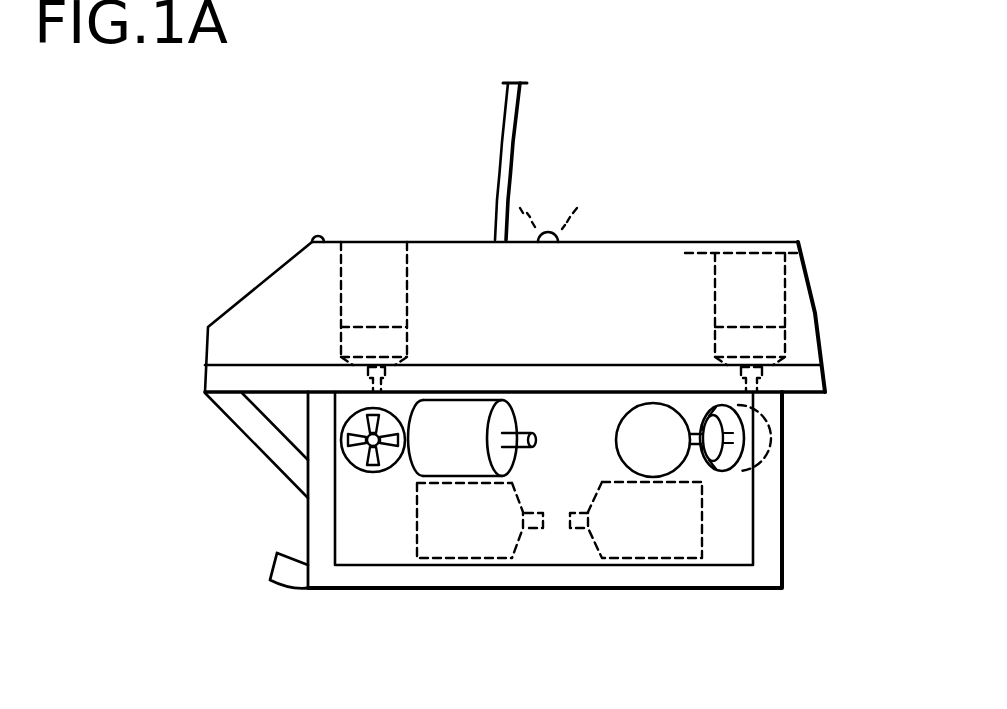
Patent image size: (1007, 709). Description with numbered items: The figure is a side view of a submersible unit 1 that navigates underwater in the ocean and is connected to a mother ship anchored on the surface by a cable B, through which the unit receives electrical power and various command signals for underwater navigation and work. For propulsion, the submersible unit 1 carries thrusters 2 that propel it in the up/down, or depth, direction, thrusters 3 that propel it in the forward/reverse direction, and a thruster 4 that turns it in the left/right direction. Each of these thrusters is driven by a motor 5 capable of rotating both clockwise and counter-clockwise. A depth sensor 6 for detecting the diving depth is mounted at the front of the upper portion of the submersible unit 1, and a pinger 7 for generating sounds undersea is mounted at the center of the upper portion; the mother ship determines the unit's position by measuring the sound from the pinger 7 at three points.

The submersible unit 1 is at (706, 203).
The thrusters 2 is at (341, 338).
The thrusters 3 is at (748, 455).
The thruster 4 is at (347, 460).
The motor 5 is at (618, 440).
The depth sensor 6 is at (322, 238).
The pinger 7 is at (548, 230).
The cable B is at (500, 143).